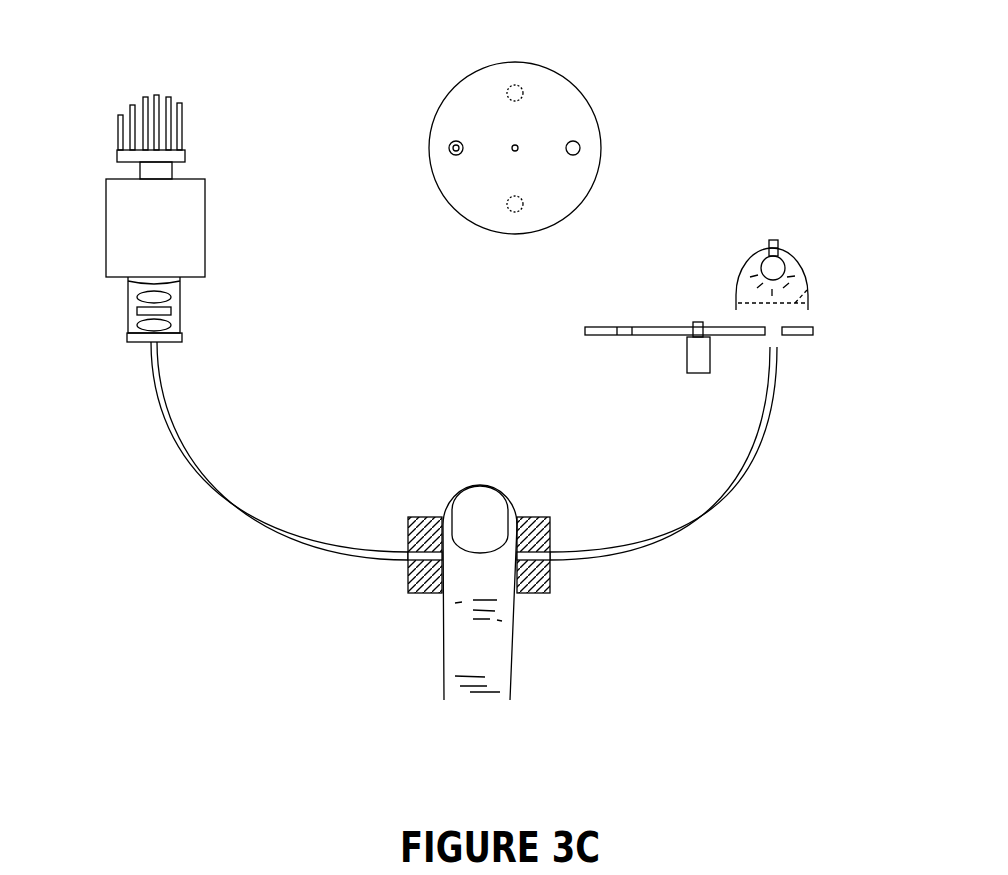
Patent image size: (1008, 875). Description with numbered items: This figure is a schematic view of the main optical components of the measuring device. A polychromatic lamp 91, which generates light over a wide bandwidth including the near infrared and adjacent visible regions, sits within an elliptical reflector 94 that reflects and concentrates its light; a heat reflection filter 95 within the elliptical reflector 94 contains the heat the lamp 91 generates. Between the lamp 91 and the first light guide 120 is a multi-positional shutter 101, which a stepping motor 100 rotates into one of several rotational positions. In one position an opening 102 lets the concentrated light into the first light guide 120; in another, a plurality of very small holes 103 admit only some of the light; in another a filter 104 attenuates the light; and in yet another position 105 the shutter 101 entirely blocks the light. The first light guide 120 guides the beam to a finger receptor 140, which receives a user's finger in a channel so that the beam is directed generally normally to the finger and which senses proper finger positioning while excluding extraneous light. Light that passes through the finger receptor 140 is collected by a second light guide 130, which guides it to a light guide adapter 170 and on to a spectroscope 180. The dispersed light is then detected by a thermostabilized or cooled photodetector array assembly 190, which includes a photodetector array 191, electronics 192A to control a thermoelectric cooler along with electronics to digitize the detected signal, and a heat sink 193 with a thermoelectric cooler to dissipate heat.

The photodetector array assembly 190 is at (217, 95).
The heat sink 193 is at (183, 110).
The electronics 192A is at (187, 152).
The photodetector array 191 is at (173, 170).
The spectroscope 180 is at (205, 229).
The light guide adapter 170 is at (182, 338).
The second light guide 130 is at (210, 487).
The first light guide 120 is at (767, 430).
The finger receptor 140 is at (537, 513).
The multi-positional shutter 101 is at (650, 326).
The opening 102 is at (580, 146).
The very small holes 103 is at (510, 207).
The filter 104 is at (449, 148).
The blocking position 105 is at (518, 87).
The stepping motor 100 is at (685, 352).
The elliptical reflector 94 is at (811, 244).
The heat reflection filter 95 is at (807, 290).
The lamp 91 is at (785, 262).